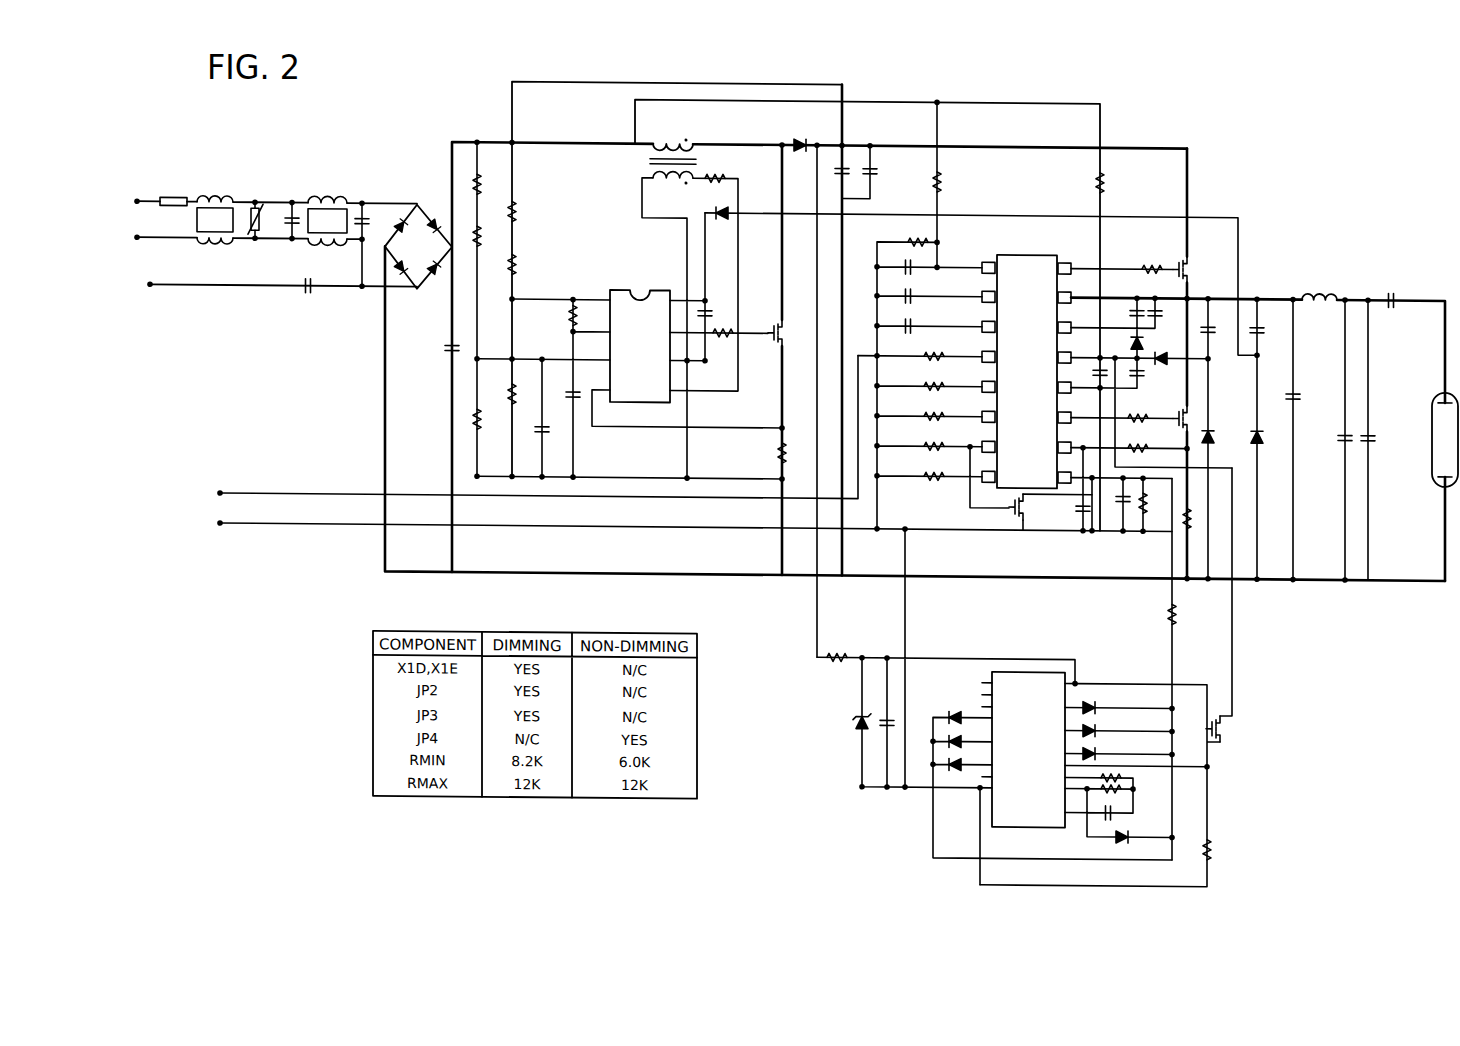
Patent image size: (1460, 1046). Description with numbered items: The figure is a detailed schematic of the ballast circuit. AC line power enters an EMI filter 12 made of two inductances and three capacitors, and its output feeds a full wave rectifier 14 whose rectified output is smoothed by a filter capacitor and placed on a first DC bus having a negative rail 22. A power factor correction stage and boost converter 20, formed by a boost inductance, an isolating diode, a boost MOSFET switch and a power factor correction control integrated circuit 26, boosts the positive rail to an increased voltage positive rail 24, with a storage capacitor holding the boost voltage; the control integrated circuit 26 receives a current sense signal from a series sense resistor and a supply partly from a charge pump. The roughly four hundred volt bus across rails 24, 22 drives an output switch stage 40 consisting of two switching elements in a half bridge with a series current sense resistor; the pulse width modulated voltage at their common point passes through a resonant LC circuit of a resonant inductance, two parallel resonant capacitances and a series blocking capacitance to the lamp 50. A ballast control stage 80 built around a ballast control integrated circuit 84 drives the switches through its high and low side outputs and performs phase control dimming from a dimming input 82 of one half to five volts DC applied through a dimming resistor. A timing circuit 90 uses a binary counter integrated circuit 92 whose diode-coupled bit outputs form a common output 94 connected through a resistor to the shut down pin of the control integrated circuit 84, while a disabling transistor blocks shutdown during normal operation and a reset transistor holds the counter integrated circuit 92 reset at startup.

The EMI filter 12 is at (268, 185).
The full wave rectifier 14 is at (418, 188).
The power factor correction stage and boost converter 20 is at (687, 73).
The negative rail 22 is at (715, 572).
The increased voltage positive rail 24 is at (990, 141).
The power factor correction control integrated circuit 26 is at (652, 306).
The output switch stage 40 is at (1202, 198).
The lamp 50 is at (1428, 404).
The ballast control stage 80 is at (1112, 126).
The dimming input 82 is at (270, 537).
The ballast control integrated circuit 84 is at (1017, 268).
The timing circuit 90 is at (1223, 765).
The binary counter integrated circuit 92 is at (1013, 803).
The common output 94 is at (1172, 646).